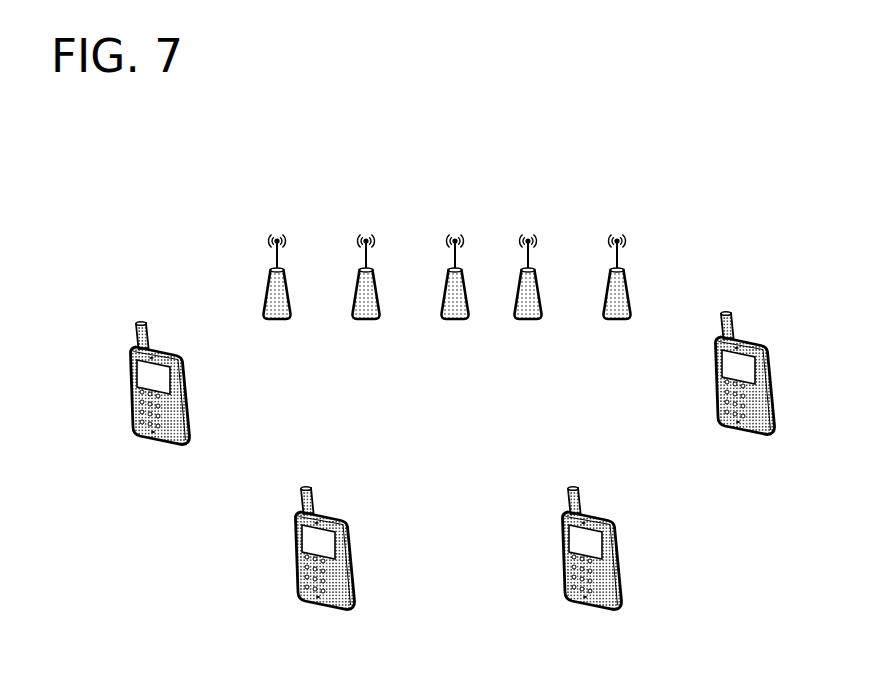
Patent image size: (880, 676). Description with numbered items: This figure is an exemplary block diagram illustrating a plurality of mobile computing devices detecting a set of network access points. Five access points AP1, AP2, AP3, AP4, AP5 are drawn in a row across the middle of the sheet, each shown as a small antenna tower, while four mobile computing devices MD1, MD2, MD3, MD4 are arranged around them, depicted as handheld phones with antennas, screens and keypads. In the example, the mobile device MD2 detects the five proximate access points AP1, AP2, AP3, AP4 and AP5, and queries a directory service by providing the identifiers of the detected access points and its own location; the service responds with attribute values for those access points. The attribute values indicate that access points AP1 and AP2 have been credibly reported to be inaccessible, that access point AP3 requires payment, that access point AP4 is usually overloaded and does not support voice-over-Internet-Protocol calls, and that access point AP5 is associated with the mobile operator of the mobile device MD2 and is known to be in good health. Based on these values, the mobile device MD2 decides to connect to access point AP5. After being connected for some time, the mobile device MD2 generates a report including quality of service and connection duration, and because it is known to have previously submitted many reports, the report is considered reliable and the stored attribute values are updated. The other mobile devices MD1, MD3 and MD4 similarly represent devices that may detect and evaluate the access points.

The network access point AP1 is at (277, 293).
The network access point AP2 is at (366, 293).
The network access point AP3 is at (455, 293).
The network access point AP4 is at (528, 293).
The network access point AP5 is at (617, 293).
The mobile computing device MD1 is at (159, 402).
The mobile computing device MD2 is at (324, 567).
The mobile computing device MD3 is at (591, 567).
The mobile computing device MD4 is at (744, 392).